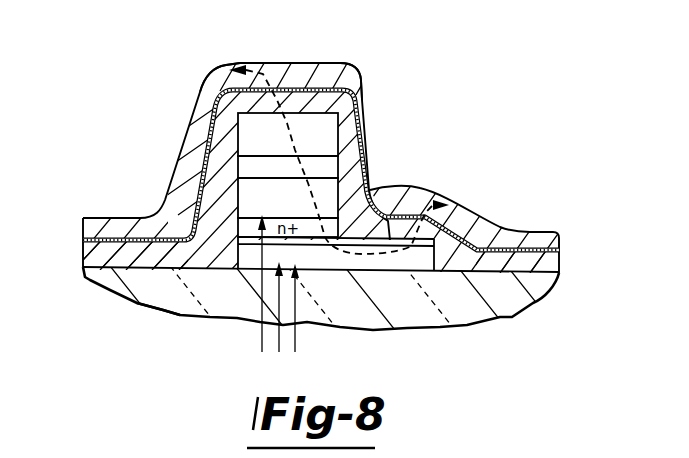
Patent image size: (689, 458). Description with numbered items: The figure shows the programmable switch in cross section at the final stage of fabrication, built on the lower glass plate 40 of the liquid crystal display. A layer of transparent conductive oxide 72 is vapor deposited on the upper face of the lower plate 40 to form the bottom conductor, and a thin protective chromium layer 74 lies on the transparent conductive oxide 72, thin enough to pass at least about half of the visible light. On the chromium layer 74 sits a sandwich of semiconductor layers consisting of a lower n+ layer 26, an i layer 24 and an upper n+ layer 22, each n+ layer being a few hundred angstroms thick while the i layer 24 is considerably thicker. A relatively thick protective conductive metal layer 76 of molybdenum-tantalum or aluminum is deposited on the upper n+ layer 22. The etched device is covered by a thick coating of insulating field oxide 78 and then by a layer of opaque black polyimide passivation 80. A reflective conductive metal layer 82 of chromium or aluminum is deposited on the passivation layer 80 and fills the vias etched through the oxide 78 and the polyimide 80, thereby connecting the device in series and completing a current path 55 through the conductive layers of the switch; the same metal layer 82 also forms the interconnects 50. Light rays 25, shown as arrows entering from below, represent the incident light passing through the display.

The conductive layer 82 is at (265, 72).
The current path 55 is at (290, 63).
The metal layer 76 is at (327, 138).
The upper n+ layer 22 is at (330, 167).
The i layer 24 is at (327, 190).
The interconnects 50 is at (108, 228).
The passivation layer 80 is at (559, 250).
The field oxide coating 78 is at (559, 263).
The lower n+ layer 26 is at (170, 312).
The light rays 25 is at (257, 335).
The transparent conductive oxide layer 72 is at (391, 262).
The chromium layer 74 is at (426, 250).
The lower plate 40 is at (512, 317).